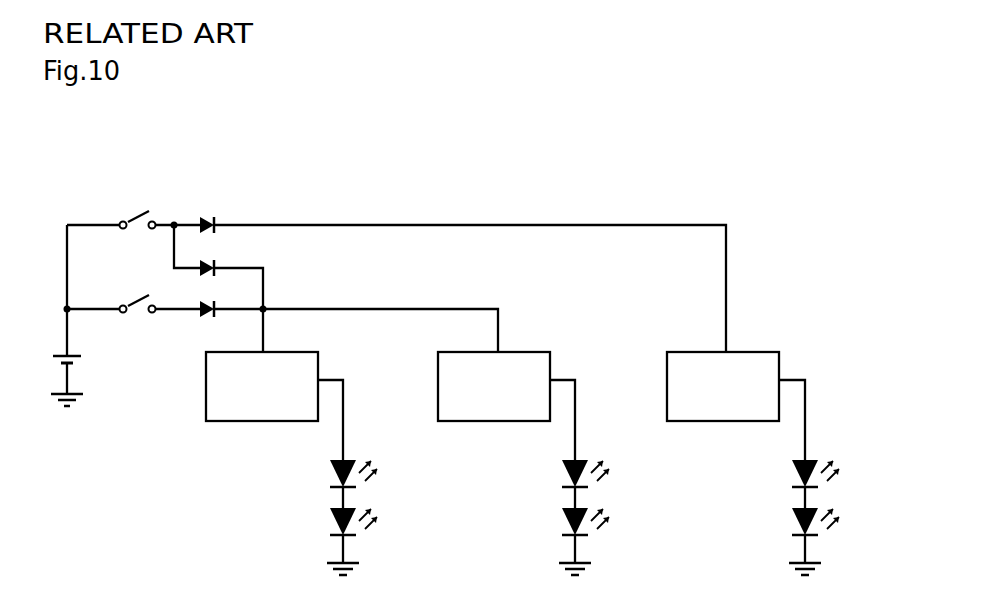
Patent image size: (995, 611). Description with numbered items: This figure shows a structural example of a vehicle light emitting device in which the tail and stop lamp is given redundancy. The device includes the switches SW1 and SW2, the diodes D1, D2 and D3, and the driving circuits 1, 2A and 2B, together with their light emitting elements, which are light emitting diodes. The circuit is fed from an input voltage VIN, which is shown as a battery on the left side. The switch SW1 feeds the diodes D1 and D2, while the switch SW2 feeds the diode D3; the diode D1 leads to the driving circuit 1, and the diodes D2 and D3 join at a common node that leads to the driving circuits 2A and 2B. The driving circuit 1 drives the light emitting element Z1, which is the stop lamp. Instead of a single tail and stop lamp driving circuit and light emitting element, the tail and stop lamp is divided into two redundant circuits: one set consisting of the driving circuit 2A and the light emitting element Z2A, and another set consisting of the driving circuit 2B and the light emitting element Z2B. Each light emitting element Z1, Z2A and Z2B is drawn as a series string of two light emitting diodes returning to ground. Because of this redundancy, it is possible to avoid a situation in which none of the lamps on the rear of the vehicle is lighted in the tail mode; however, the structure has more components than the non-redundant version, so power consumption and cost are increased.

The switch SW1 is at (139, 212).
The switch SW2 is at (139, 296).
The diode D1 is at (211, 213).
The diode D2 is at (211, 254).
The diode D3 is at (211, 295).
The input voltage source VIN is at (57, 369).
The driving circuit 2A is at (302, 352).
The driving circuit 2B is at (534, 352).
The driving circuit 1 is at (764, 352).
The light emitting element Z2A is at (378, 443).
The light emitting element Z2B is at (610, 443).
The light emitting element Z1 is at (840, 443).